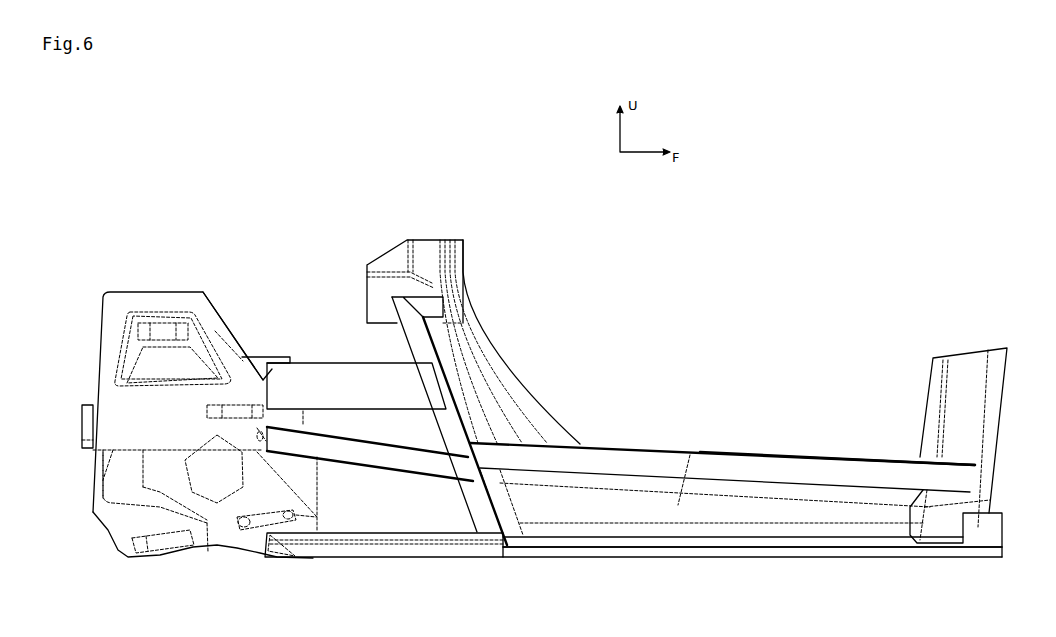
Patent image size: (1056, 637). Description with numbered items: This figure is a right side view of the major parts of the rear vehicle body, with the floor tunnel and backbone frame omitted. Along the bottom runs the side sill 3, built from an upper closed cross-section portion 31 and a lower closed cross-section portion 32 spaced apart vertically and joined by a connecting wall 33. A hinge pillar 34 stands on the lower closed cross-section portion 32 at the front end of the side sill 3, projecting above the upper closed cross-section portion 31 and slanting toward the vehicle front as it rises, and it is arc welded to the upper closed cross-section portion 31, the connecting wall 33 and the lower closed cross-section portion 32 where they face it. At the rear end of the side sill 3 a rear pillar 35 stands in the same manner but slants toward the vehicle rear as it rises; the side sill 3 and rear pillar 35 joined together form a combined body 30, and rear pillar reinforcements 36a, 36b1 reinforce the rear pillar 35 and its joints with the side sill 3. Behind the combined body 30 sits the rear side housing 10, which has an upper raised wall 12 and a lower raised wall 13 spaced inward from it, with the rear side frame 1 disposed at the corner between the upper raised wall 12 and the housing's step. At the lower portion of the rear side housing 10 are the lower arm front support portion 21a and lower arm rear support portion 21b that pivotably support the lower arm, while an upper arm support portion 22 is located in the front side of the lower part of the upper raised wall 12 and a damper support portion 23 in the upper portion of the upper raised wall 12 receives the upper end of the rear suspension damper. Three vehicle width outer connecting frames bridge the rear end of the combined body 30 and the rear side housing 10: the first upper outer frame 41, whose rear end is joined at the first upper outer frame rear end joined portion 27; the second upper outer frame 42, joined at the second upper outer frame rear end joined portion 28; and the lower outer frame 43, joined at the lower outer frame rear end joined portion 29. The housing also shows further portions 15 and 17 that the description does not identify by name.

The rear side frame 1 is at (79, 424).
The side sill 3 is at (636, 442).
The rear side housing 10 is at (115, 291).
The upper raised wall 12 is at (149, 290).
The lower raised wall 13 is at (122, 534).
The side plate 15 is at (318, 481).
The lower edge member 17 is at (206, 553).
The lower arm front support portion 21a is at (262, 531).
The lower arm rear support portion 21b is at (147, 546).
The upper arm support portion 22 is at (233, 404).
The damper support portion 23 is at (171, 322).
The first upper outer frame rear end joined portion 27 is at (272, 356).
The second upper outer frame rear end joined portion 28 is at (268, 440).
The lower outer frame rear end joined portion 29 is at (305, 554).
The combined body 30 is at (563, 572).
The upper closed cross-section portion 31 is at (769, 456).
The lower closed cross-section portion 32 is at (656, 556).
The connecting wall 33 is at (694, 456).
The hinge pillar 34 is at (990, 462).
The rear pillar 35 is at (472, 491).
The rear pillar reinforcement 36a is at (466, 270).
The rear pillar reinforcement 36b1 is at (500, 371).
The first upper outer frame 41 is at (367, 362).
The second upper outer frame 42 is at (358, 470).
The lower outer frame 43 is at (388, 565).